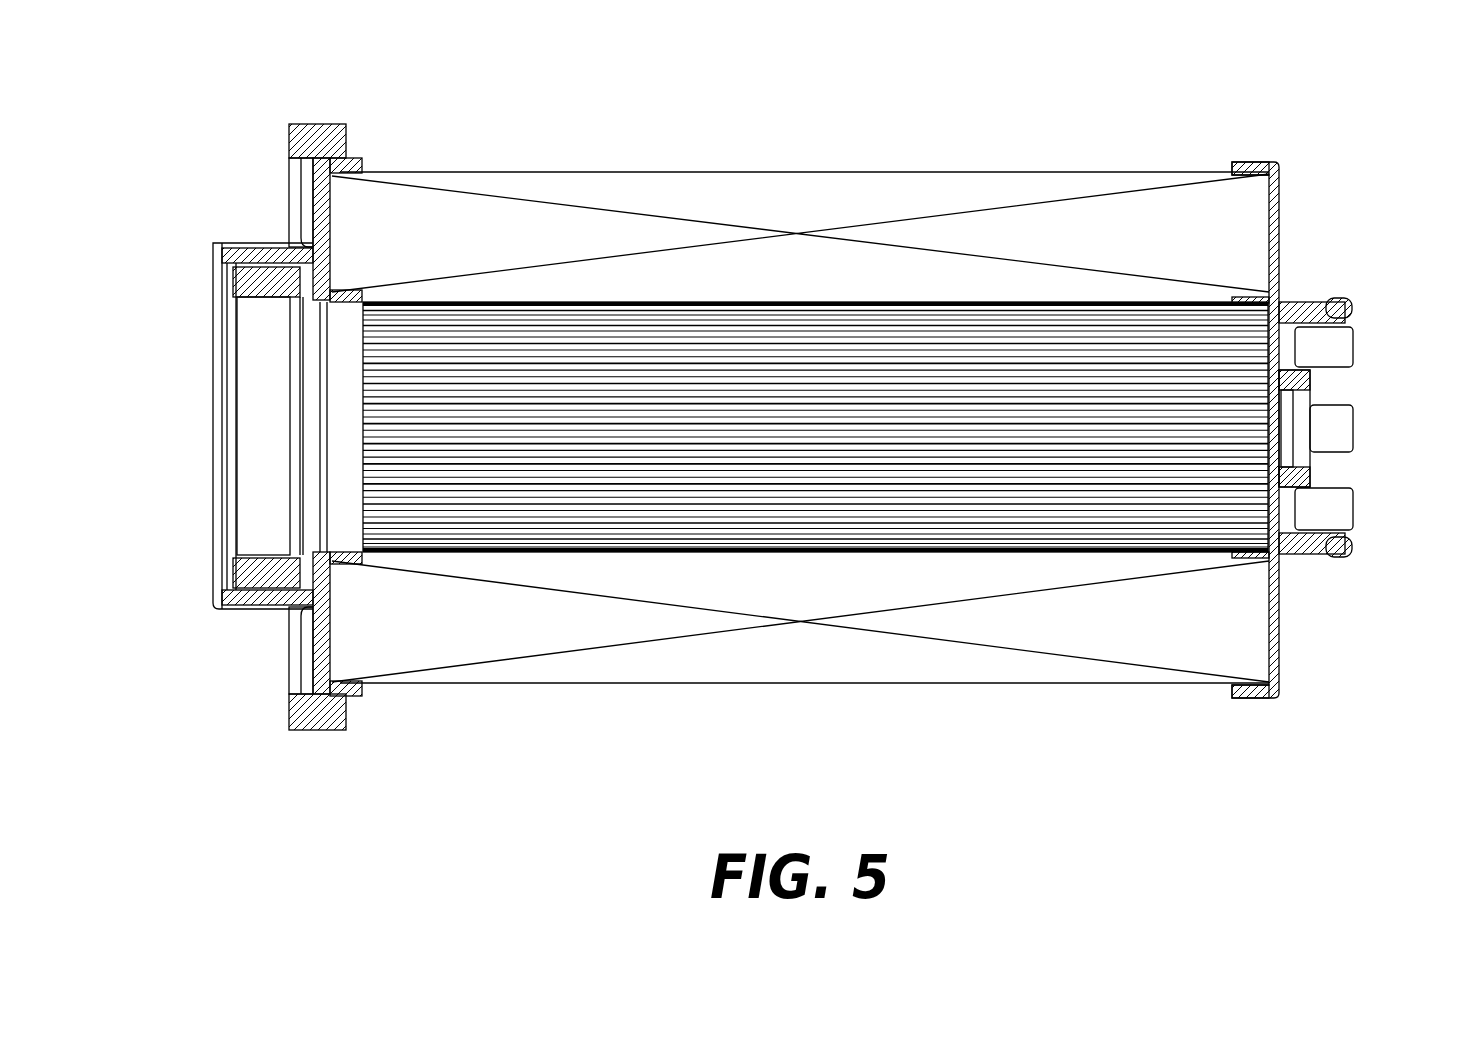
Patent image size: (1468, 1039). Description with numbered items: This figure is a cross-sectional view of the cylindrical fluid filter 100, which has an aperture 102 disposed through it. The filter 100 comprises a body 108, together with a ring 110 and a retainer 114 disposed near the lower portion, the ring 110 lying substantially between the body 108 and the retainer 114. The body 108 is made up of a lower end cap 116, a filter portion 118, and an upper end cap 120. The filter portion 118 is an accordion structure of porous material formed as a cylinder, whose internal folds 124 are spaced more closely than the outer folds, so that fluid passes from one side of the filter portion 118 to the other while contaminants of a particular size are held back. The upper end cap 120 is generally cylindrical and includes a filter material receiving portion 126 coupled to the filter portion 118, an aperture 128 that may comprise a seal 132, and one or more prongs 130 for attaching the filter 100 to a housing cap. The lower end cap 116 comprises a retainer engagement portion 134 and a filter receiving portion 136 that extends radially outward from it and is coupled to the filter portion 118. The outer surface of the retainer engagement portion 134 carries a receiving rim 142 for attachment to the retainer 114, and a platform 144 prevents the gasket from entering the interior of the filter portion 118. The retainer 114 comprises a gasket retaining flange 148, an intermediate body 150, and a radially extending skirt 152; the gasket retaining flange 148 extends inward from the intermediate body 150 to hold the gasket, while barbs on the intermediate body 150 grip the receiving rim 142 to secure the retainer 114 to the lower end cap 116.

The filter 100 is at (1158, 690).
The aperture 102 is at (1045, 302).
The body 108 is at (750, 144).
The ring 110 is at (318, 125).
The retainer 114 is at (213, 242).
The lower end cap 116 is at (368, 687).
The filter portion 118 is at (965, 684).
The upper end cap 120 is at (1279, 627).
The internal folds 124 is at (938, 323).
The filter material receiving portion 126 is at (1237, 193).
The aperture 128 is at (1305, 472).
The prongs 130 is at (1352, 343).
The seal 132 is at (1305, 387).
The retainer engagement portion 134 is at (283, 247).
The filter receiving portion 136 is at (353, 175).
The receiving rim 142 is at (243, 280).
The platform 144 is at (340, 288).
The gasket retaining flange 148 is at (210, 322).
The intermediate body 150 is at (212, 608).
The radially extending skirt 152 is at (303, 668).